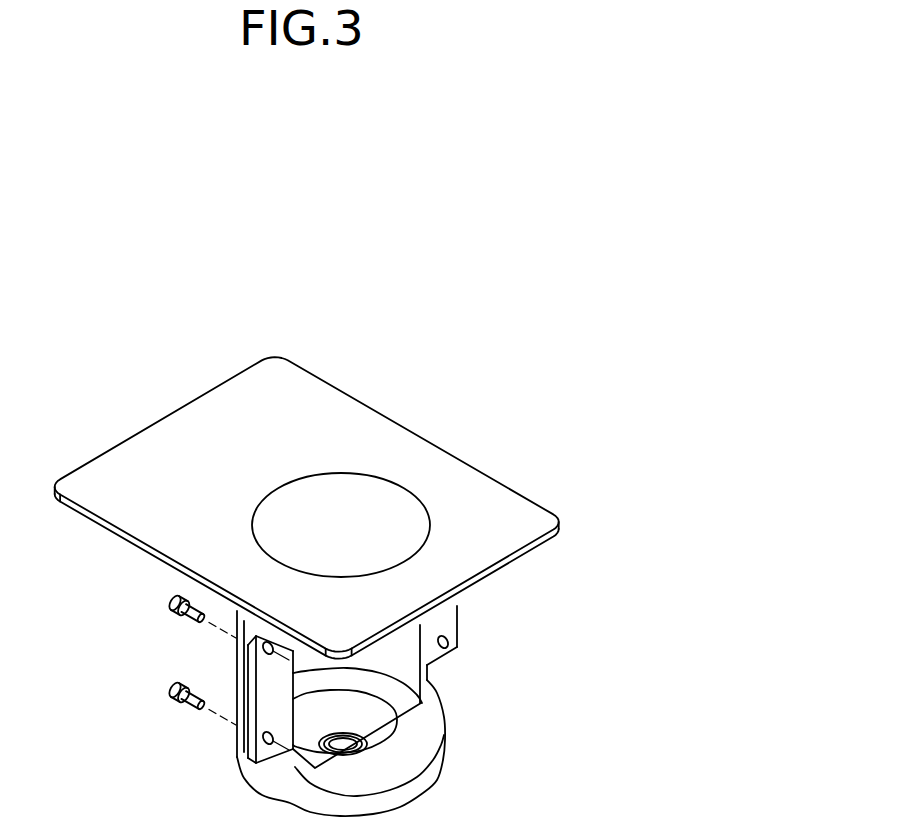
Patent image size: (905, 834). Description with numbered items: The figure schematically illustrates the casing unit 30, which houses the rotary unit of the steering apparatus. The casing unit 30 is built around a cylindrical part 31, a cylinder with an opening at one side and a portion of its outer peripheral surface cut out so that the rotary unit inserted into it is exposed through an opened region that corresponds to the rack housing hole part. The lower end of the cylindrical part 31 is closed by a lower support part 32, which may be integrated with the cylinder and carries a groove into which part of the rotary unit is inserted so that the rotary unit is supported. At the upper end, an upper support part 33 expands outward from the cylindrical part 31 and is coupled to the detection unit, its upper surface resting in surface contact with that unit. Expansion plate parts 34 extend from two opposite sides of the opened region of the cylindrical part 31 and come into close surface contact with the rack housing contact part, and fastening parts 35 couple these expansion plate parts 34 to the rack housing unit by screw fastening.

The casing unit 30 is at (588, 229).
The cylindrical part 31 is at (238, 662).
The lower support part 32 is at (428, 750).
The upper support part 33 is at (508, 500).
The expansion plate parts 34 is at (449, 621).
The fastening part 35 is at (192, 705).